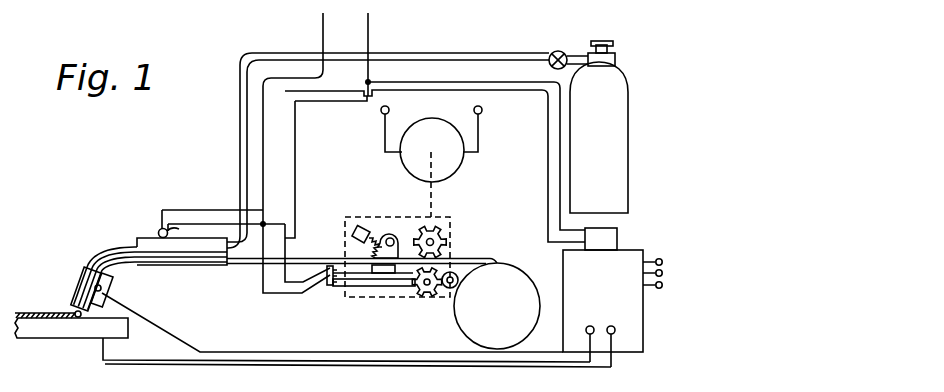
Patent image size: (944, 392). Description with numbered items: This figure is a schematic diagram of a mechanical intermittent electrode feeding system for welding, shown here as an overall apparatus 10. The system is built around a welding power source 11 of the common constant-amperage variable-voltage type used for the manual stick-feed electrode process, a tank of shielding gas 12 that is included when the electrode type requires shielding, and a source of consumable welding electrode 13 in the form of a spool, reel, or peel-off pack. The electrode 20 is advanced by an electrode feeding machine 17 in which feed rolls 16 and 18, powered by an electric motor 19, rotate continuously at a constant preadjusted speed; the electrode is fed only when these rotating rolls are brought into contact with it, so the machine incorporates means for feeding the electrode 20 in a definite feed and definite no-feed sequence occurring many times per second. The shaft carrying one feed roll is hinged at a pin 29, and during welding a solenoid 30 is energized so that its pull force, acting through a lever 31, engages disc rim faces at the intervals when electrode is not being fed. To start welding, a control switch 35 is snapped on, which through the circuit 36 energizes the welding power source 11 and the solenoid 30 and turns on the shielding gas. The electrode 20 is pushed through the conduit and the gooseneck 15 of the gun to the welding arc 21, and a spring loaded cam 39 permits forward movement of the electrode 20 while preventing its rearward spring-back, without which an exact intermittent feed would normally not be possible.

The torch head assembly 10 is at (104, 249).
The welding power source 11 is at (637, 323).
The tank of shielding gas 12 is at (630, 152).
The source of consumable welding electrode 13 is at (532, 262).
The gooseneck 15 is at (125, 267).
The feed roll 16 is at (447, 235).
The electrode feeding machine 17 is at (367, 210).
The feed roll 18 is at (418, 287).
The electric motor 19 is at (463, 170).
The electrode 20 is at (308, 258).
The welding arc 21 is at (66, 307).
The pin 29 is at (458, 283).
The solenoid 30 is at (322, 290).
The lever 31 is at (343, 290).
The control switch 35 is at (157, 231).
The circuit 36 is at (298, 113).
The spring loaded cam 39 is at (391, 232).